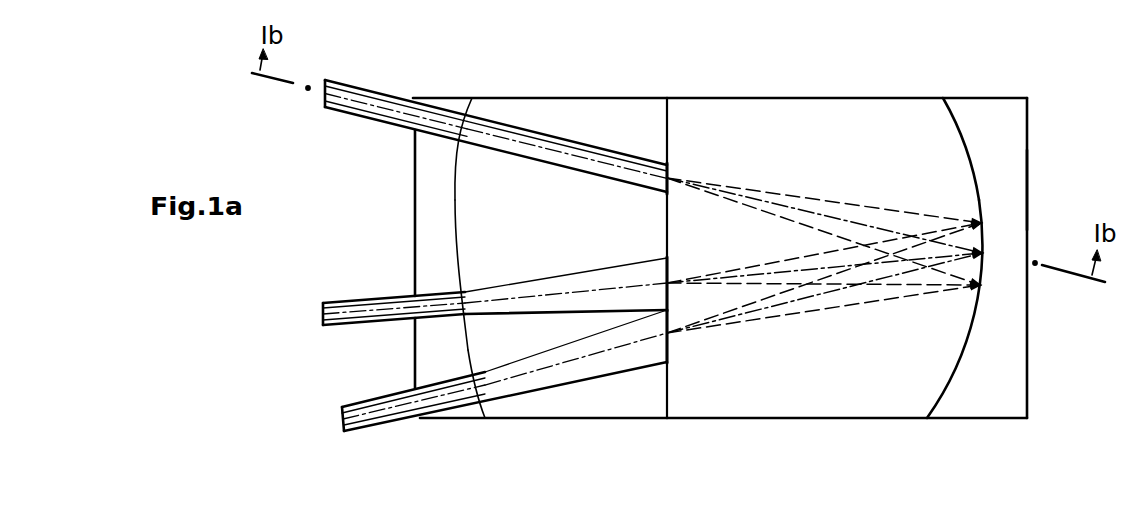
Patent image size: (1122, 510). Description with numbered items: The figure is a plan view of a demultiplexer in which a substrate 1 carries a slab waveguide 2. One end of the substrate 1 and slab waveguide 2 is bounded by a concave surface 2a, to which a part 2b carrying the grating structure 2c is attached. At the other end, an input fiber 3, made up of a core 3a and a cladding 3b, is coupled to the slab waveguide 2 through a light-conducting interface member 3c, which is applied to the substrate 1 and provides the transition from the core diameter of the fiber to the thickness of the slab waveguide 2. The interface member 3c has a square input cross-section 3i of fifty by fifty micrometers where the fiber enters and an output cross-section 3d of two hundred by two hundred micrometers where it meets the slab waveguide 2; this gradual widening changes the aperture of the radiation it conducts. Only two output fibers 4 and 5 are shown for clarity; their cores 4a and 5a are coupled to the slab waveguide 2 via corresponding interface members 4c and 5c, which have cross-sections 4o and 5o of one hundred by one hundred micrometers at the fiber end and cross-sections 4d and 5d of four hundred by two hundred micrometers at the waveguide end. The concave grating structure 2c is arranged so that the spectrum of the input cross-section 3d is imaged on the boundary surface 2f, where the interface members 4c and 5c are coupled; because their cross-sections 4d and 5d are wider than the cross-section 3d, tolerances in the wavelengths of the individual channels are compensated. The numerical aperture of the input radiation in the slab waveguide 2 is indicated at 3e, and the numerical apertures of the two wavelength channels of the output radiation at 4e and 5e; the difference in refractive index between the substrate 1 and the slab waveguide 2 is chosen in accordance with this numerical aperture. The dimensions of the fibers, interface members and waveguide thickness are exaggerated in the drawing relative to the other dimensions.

The substrate 1 is at (600, 122).
The slab waveguide 2 is at (877, 110).
The concave surface 2a is at (960, 138).
The part with grating structure 2b is at (1008, 190).
The grating structure 2c is at (982, 238).
The boundary surface 2f is at (668, 396).
The input fiber 3 is at (375, 80).
The core of input fiber 3a is at (346, 100).
The cladding of input fiber 3b is at (388, 117).
The interface member of input fiber 3c is at (525, 132).
The output cross-section of input interface member 3d is at (663, 165).
The numerical aperture of input radiation 3e is at (784, 198).
The input cross-section of input interface member 3i is at (466, 126).
The output fiber 4 is at (372, 281).
The core of output fiber 4a is at (333, 324).
The interface member of first output fiber 4c is at (548, 277).
The cross-section of first output interface member at slab 4d is at (665, 282).
The numerical aperture of first output channel 4e is at (766, 271).
The cross-section of first output interface member at fiber 4o is at (463, 304).
The output fiber 5 is at (380, 437).
The core of output fiber 5a is at (347, 428).
The interface member of second output fiber 5c is at (570, 380).
The cross-section of second output interface member at slab 5d is at (658, 342).
The numerical aperture of second output channel 5e is at (767, 320).
The cross-section of second output interface member at fiber 5o is at (490, 392).